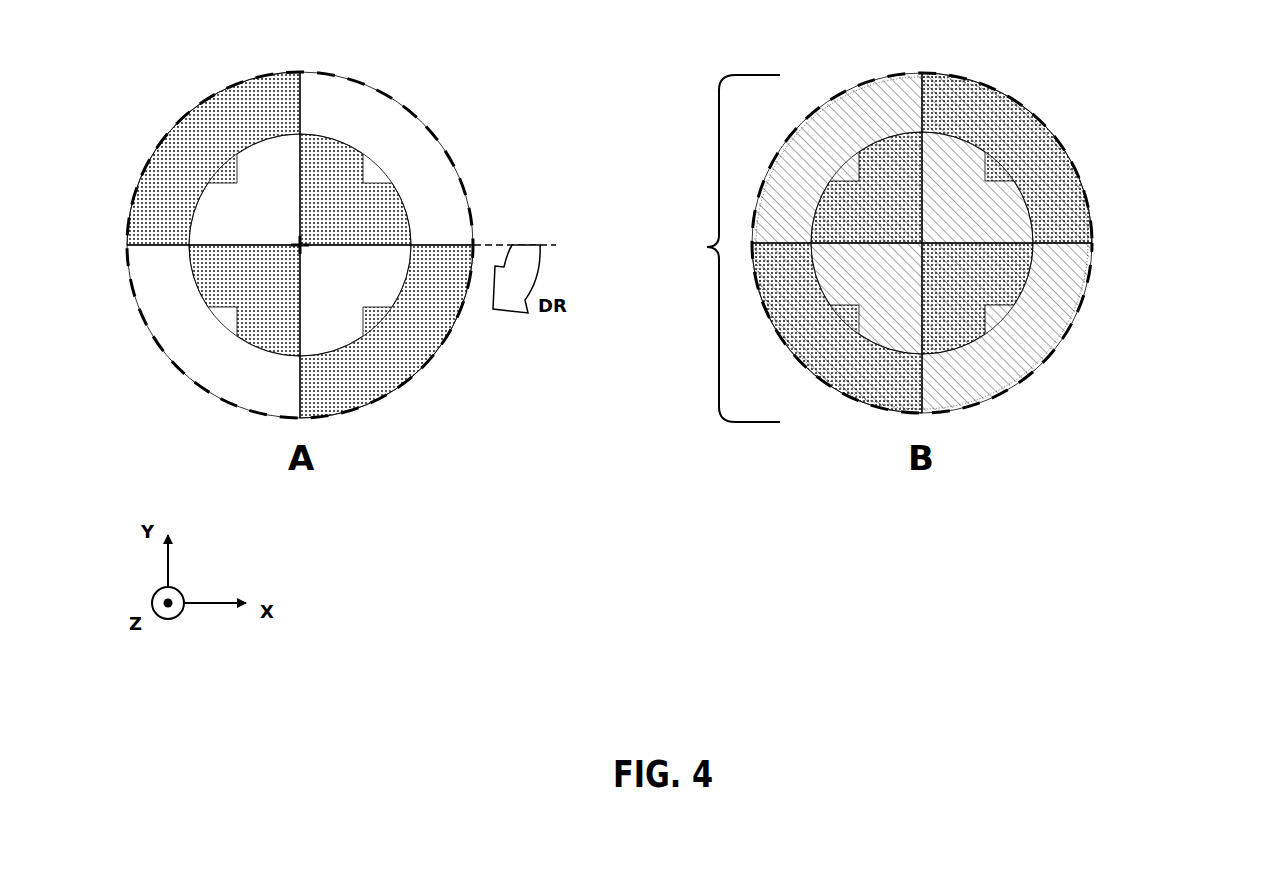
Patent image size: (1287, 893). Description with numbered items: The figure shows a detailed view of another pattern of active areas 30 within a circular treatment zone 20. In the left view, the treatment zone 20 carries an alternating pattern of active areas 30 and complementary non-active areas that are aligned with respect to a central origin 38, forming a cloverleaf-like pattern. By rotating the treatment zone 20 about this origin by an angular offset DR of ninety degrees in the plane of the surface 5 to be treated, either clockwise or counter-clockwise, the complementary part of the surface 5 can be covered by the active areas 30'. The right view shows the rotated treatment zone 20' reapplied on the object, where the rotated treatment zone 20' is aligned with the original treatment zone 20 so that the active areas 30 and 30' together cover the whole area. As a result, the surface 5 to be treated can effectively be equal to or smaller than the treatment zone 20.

The surface to be treated 5 is at (716, 248).
The treatment zone 20 is at (602, 235).
The rotated treatment zone 20' is at (939, 241).
The active areas 30 is at (648, 252).
The active areas of rotated treatment zone 30' is at (989, 243).
The central origin 38 is at (301, 244).